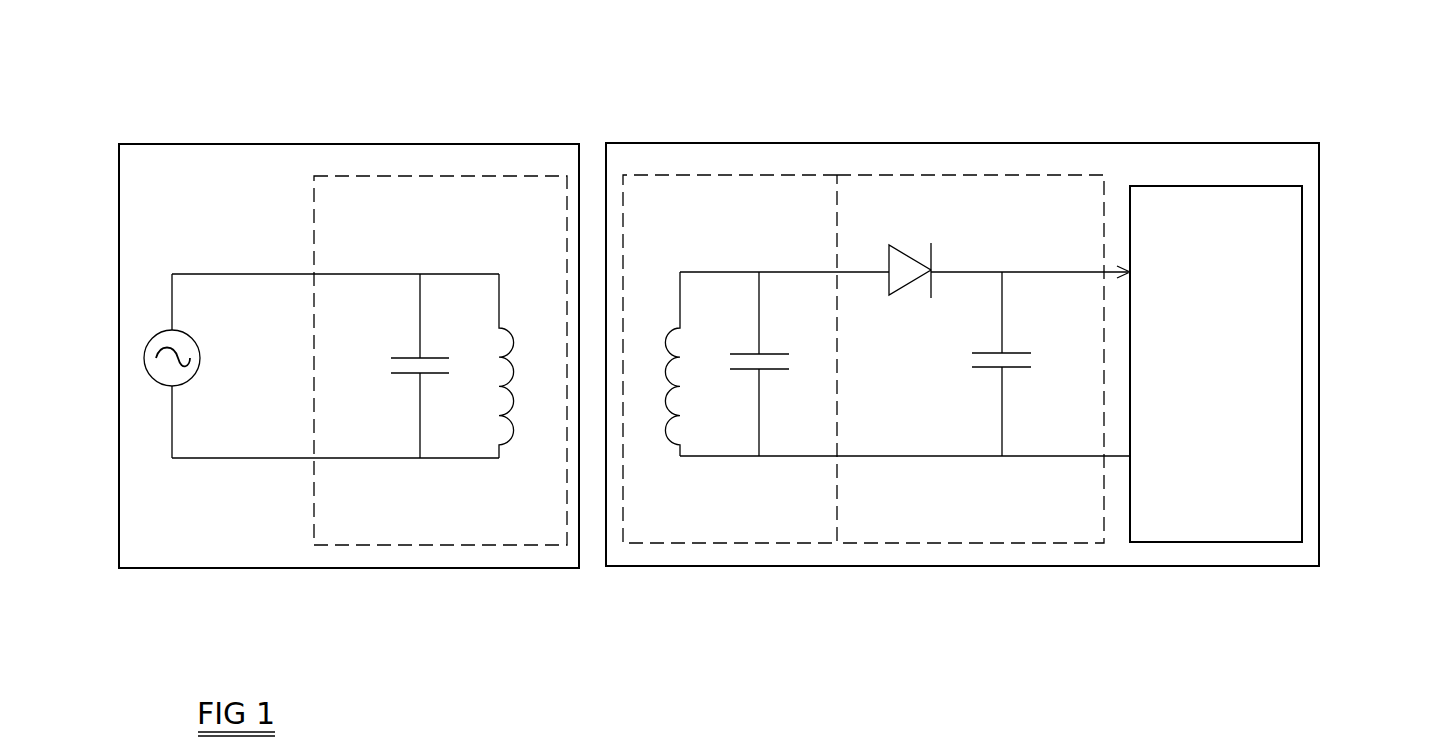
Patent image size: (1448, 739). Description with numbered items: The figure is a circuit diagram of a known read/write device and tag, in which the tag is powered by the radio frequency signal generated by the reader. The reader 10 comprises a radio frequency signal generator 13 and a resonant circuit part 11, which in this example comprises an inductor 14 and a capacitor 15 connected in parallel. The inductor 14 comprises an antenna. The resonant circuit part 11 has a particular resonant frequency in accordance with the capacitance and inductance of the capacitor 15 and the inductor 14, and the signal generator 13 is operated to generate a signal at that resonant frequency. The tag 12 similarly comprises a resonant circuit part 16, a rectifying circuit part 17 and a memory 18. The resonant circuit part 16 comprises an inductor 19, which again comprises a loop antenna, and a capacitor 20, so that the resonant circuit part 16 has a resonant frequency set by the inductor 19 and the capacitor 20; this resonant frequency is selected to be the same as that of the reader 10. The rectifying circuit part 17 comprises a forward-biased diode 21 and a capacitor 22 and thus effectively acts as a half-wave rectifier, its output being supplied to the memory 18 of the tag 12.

The reader 10 is at (452, 140).
The resonant circuit part 11 is at (512, 175).
The tag 12 is at (1192, 121).
The radio frequency signal generator 13 is at (166, 388).
The inductor 14 is at (516, 398).
The capacitor 15 is at (432, 375).
The resonant circuit part 16 is at (797, 543).
The rectifying circuit part 17 is at (1045, 543).
The memory 18 is at (1287, 268).
The inductor 19 is at (664, 340).
The capacitor 20 is at (748, 355).
The forward-biased diode 21 is at (900, 250).
The capacitor 22 is at (1005, 350).